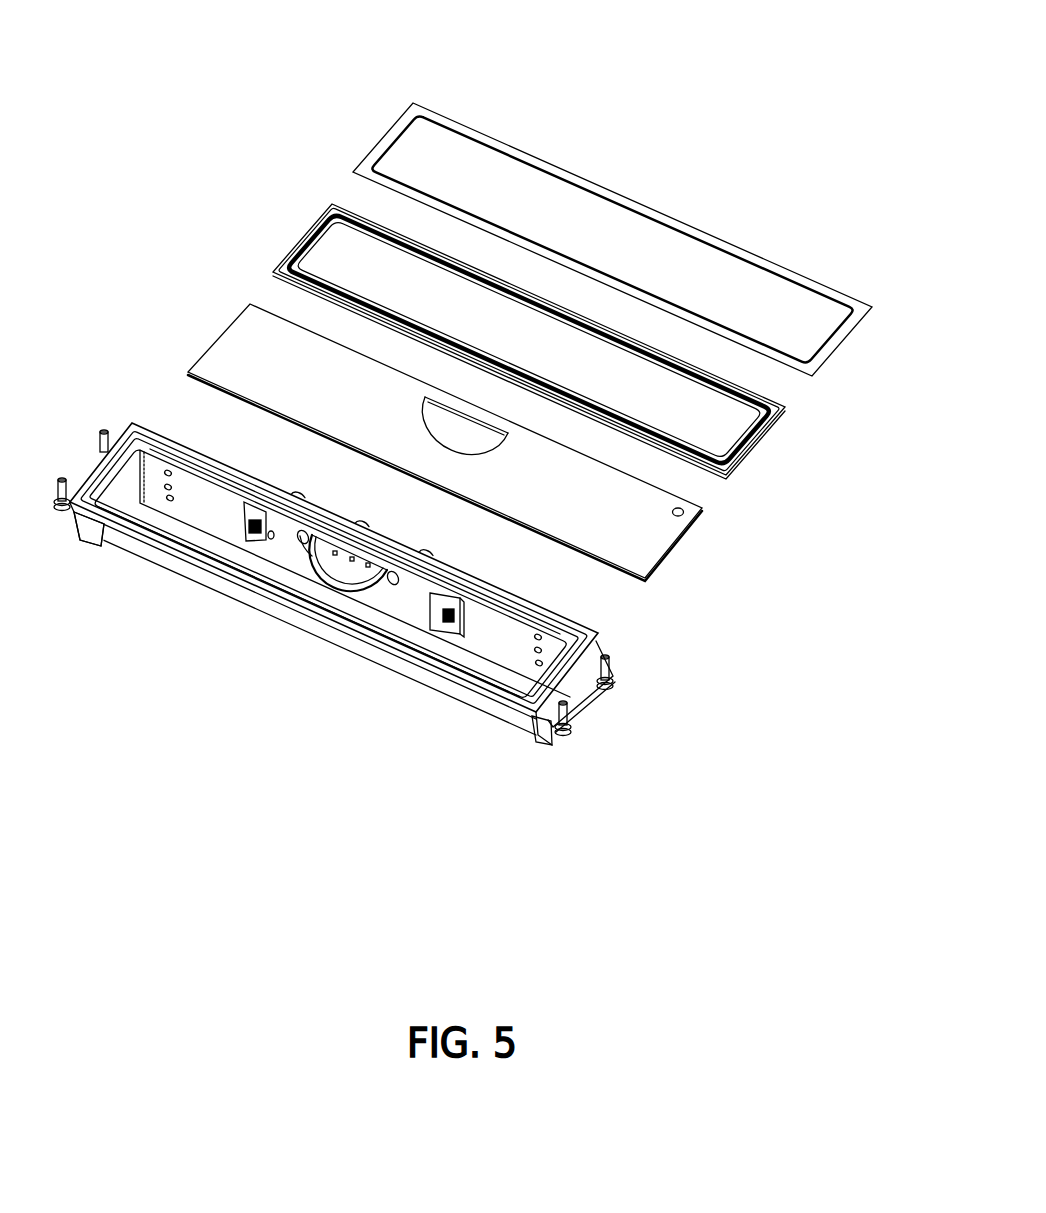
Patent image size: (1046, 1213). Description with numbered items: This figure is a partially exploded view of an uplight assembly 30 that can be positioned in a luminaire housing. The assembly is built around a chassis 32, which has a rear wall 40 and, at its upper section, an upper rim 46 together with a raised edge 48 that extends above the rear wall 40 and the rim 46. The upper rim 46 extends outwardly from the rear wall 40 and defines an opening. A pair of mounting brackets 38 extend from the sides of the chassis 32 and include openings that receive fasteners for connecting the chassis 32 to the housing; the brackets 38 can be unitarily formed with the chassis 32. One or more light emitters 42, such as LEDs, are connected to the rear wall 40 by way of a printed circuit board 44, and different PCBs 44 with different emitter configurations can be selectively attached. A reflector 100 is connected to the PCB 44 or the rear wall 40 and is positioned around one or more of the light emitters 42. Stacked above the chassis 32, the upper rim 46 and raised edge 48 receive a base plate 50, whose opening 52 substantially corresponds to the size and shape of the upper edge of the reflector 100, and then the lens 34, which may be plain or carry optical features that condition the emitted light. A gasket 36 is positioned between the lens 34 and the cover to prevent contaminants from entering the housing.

The uplight assembly 30 is at (183, 146).
The chassis 32 is at (122, 404).
The lens 34 is at (757, 447).
The gasket 36 is at (803, 282).
The mounting brackets 38 is at (78, 463).
The rear wall 40 is at (540, 664).
The light emitters 42 is at (350, 560).
The printed circuit board 44 is at (417, 603).
The upper rim 46 is at (72, 510).
The raised edge 48 is at (552, 613).
The base plate 50 is at (645, 538).
The opening 52 is at (418, 430).
The reflector 100 is at (308, 566).